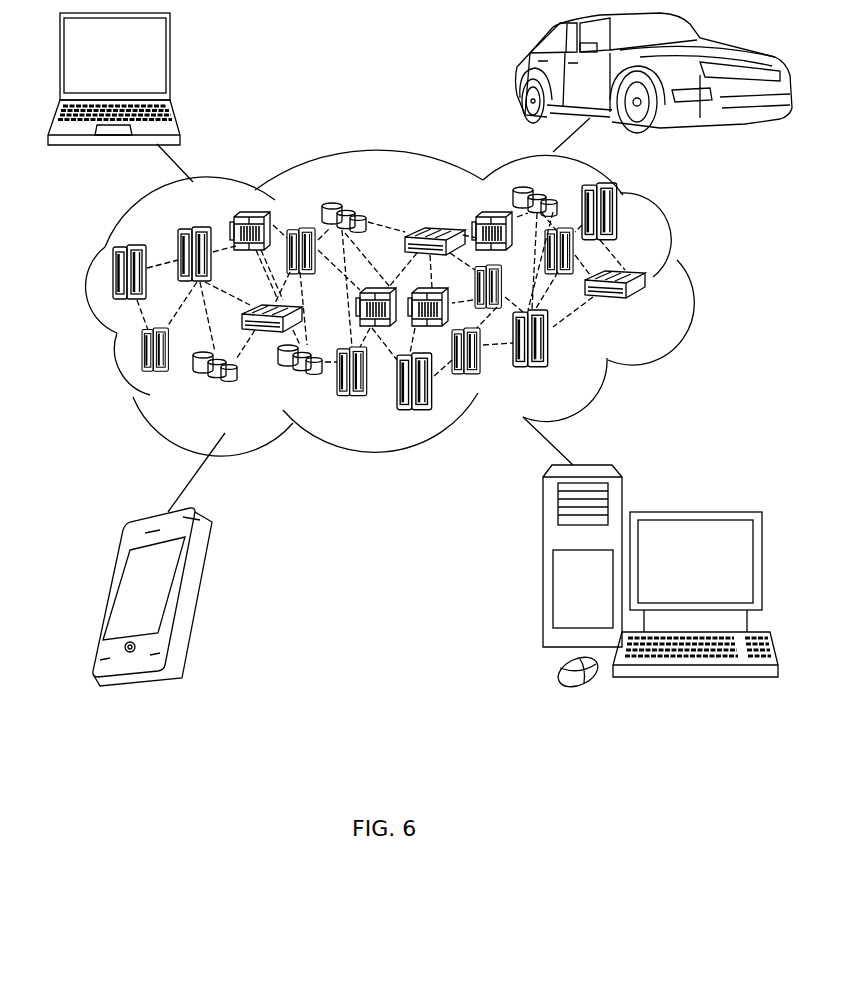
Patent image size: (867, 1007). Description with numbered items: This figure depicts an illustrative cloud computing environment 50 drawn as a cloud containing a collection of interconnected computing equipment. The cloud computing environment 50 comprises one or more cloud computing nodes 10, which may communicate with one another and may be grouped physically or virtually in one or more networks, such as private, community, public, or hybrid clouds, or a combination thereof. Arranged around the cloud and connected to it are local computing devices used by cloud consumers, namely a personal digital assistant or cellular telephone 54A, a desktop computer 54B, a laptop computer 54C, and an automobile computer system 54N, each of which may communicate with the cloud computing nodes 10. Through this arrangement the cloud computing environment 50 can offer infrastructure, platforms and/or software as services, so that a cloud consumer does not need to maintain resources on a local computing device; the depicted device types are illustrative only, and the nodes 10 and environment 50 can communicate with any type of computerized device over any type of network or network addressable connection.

The cloud computing node 10 is at (647, 305).
The cloud computing environment 50 is at (693, 281).
The personal digital assistant or cellular telephone 54A is at (203, 563).
The desktop computer 54B is at (692, 510).
The laptop computer 54C is at (170, 61).
The automobile computer system 54N is at (520, 72).